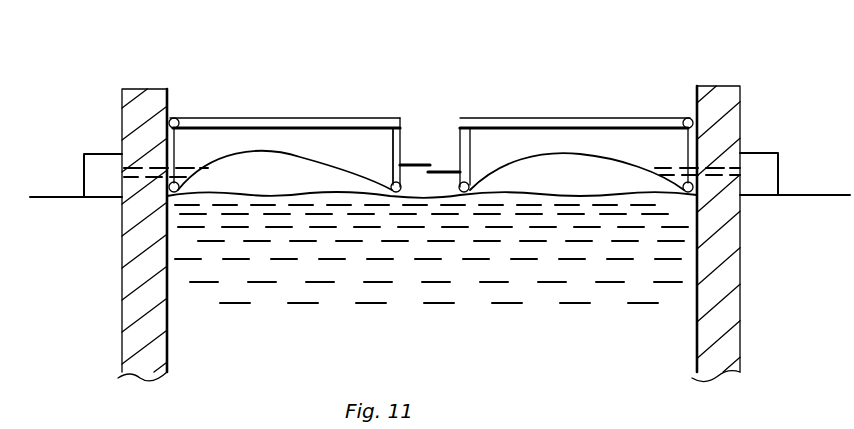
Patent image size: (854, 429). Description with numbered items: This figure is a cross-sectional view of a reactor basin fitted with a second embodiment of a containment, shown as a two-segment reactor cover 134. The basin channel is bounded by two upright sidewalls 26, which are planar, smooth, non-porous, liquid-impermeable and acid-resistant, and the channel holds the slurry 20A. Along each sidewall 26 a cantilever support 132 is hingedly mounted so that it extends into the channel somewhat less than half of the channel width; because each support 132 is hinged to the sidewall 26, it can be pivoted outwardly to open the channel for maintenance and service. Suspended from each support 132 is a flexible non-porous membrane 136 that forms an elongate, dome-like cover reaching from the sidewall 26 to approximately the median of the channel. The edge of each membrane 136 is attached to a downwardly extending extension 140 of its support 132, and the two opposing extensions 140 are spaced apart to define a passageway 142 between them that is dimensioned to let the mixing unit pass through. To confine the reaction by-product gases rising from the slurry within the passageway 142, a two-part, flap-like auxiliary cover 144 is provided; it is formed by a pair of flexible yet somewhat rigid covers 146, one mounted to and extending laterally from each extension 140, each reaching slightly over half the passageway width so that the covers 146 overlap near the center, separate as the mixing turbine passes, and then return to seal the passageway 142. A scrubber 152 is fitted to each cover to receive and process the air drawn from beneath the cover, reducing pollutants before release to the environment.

The sidewall 26 is at (128, 258).
The scrubber 152 is at (98, 165).
The body of water 20A is at (445, 305).
The cantilever support 132 is at (222, 118).
The two-segment reactor cover 134 is at (322, 118).
The downwardly extending extension 140 is at (390, 135).
The cover 146 is at (368, 156).
The flexible non-porous membrane 136 is at (297, 157).
The passageway 142 is at (418, 123).
The auxiliary cover 144 is at (440, 168).